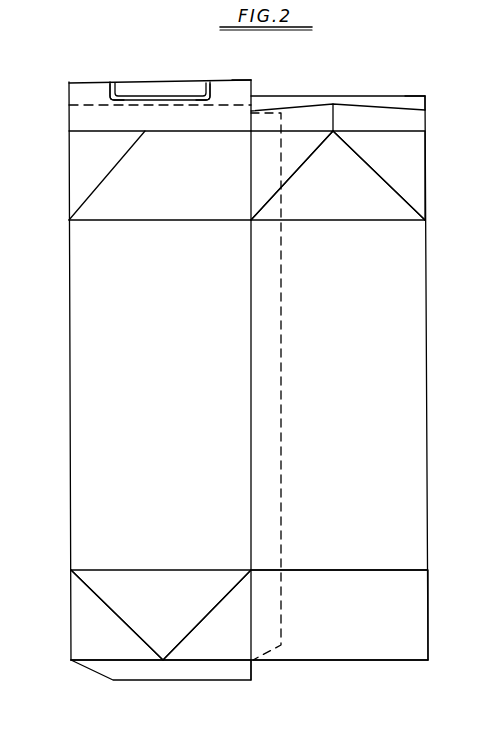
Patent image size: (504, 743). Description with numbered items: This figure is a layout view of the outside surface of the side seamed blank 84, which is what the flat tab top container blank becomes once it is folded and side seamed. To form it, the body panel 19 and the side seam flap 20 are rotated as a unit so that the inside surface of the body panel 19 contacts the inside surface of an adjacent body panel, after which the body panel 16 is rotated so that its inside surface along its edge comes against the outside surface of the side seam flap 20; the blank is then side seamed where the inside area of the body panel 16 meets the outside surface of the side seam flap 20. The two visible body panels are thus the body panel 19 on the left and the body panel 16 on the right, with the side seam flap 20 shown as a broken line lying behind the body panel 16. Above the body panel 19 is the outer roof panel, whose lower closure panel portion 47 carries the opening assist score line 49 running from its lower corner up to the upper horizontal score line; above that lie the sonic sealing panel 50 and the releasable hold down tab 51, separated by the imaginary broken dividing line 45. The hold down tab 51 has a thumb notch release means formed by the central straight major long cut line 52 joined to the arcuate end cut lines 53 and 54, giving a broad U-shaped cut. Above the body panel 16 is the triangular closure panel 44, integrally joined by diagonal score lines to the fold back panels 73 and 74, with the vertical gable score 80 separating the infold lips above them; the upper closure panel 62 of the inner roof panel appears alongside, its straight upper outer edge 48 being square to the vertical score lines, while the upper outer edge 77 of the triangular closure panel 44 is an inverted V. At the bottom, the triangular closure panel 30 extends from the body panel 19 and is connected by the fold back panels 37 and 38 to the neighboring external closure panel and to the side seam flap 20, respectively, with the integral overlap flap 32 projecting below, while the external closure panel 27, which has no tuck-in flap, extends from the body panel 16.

The body panel 16 is at (249, 378).
The body panel 19 is at (248, 380).
The side seam flap 20 is at (268, 383).
The external closure panel 27 is at (339, 615).
The triangular closure panel 30 is at (161, 615).
The overlap flap 32 is at (194, 668).
The fold back panel 37 is at (117, 615).
The fold back panel 38 is at (207, 615).
The triangular closure panel 44 is at (338, 175).
The broken line 45 is at (92, 104).
The lower closure panel portion 47 is at (160, 150).
The upper outer edge 48 is at (398, 96).
The opening assist score line 49 is at (113, 170).
The sonic sealing panel 50 is at (77, 118).
The hold down tab 51 is at (243, 90).
The central straight major long cut line 52 is at (171, 95).
The end cut line 53 is at (115, 92).
The end cut line 54 is at (208, 94).
The upper closure panel 62 is at (313, 99).
The fold back panel 73 is at (379, 175).
The fold back panel 74 is at (292, 175).
The upper outer edge 77 is at (412, 96).
The vertical gable score 80 is at (334, 118).
The side seamed blank 84 is at (161, 86).